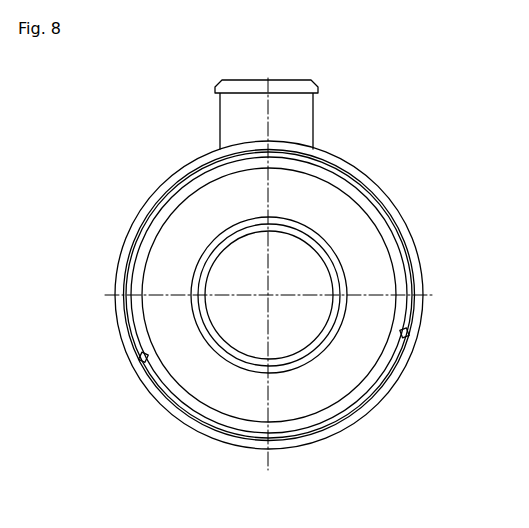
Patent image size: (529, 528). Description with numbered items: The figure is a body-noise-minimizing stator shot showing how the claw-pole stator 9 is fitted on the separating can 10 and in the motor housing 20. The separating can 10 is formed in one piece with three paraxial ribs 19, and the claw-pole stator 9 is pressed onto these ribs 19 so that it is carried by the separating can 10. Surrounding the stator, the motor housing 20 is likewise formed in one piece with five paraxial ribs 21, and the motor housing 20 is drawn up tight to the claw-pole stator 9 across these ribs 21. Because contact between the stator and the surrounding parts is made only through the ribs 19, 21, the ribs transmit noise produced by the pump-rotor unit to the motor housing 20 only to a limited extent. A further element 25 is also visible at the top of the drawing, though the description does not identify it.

The claw-pole stator 9 is at (178, 270).
The separating can 10 is at (202, 310).
The paraxial ribs 19 is at (268, 217).
The motor housing 20 is at (416, 263).
The paraxial ribs 21 is at (197, 177).
The neck connector 25 is at (299, 123).